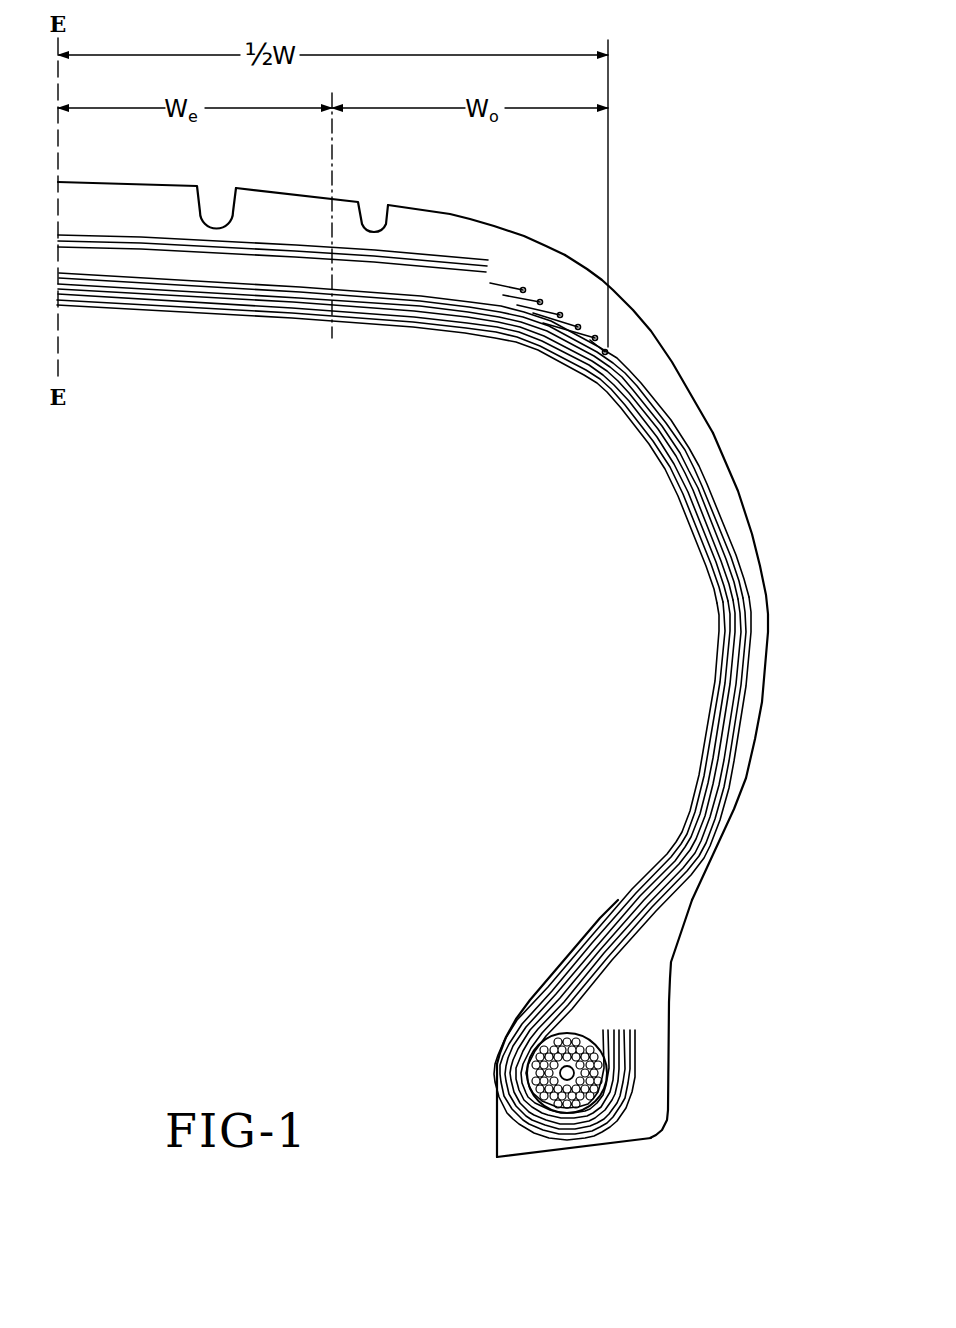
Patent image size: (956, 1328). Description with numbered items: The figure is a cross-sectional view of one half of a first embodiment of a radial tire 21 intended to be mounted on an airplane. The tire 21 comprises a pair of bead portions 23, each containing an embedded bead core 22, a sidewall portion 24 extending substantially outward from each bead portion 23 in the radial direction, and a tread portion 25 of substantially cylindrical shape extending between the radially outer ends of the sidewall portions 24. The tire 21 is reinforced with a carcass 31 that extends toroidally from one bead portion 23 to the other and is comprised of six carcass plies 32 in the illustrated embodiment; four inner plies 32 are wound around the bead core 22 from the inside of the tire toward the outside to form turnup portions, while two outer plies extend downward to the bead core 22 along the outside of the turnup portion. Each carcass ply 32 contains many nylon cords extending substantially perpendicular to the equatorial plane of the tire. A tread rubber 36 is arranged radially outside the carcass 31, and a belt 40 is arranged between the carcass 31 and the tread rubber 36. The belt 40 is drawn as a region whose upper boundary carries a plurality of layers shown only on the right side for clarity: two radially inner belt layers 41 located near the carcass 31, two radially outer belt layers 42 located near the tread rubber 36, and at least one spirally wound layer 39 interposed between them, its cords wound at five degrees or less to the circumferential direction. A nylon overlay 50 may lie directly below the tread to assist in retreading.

The radial tire 21 is at (713, 433).
The bead core 22 is at (547, 1073).
The bead portion 23 is at (561, 960).
The sidewall portion 24 is at (775, 592).
The tread portion 25 is at (428, 204).
The carcass 31 is at (620, 420).
The carcass ply 32 is at (730, 715).
The tread rubber 36 is at (284, 217).
The spirally wound layer 39 is at (581, 327).
The belt 40 is at (514, 274).
The radially inner belt layer 41 is at (608, 372).
The radially outer belt layer 42 is at (562, 315).
The nylon overlay 50 is at (118, 235).